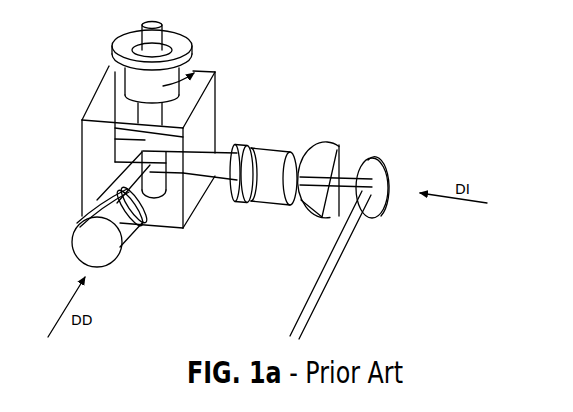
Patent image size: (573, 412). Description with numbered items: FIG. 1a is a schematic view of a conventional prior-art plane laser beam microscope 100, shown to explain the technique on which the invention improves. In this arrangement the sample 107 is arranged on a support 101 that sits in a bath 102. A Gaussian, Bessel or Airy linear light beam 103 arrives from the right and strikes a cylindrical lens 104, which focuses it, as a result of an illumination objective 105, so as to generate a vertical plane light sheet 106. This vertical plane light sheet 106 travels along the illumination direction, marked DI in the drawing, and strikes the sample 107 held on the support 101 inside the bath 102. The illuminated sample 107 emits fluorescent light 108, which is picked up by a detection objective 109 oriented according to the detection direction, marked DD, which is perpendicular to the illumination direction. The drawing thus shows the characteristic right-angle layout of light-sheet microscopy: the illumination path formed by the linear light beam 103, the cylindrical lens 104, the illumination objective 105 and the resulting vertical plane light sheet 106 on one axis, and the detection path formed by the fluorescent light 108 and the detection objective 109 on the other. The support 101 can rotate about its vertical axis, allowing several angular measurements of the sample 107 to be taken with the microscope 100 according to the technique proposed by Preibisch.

The plane laser beam microscope 100 is at (347, 49).
The support 101 is at (183, 41).
The bath 102 is at (216, 88).
The linear light beam 103 is at (344, 247).
The cylindrical lens 104 is at (332, 147).
The illumination objective 105 is at (270, 147).
The vertical plane light sheet 106 is at (240, 150).
The sample 107 is at (140, 160).
The fluorescent light 108 is at (113, 160).
The detection objective 109 is at (79, 212).